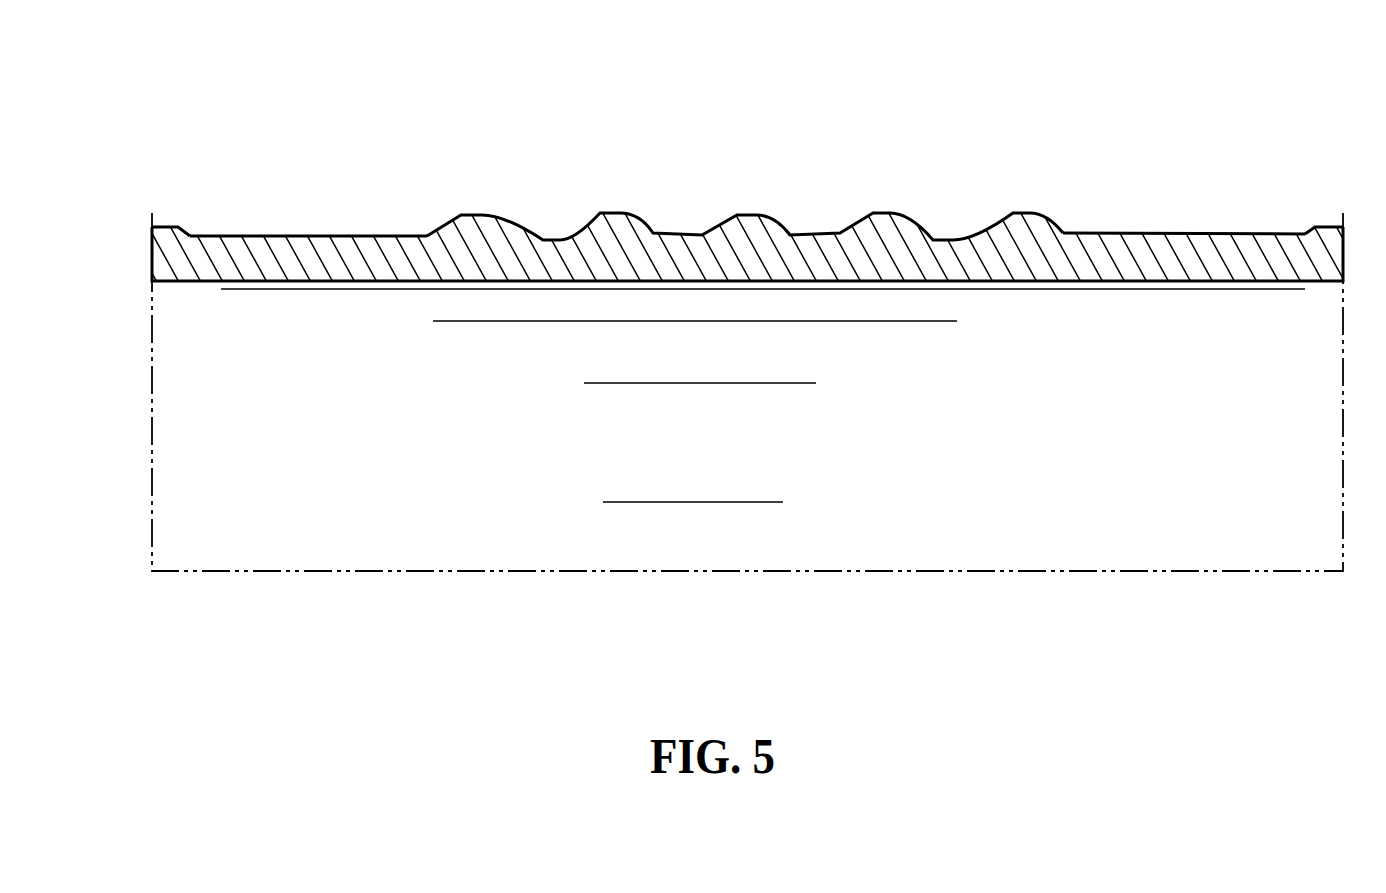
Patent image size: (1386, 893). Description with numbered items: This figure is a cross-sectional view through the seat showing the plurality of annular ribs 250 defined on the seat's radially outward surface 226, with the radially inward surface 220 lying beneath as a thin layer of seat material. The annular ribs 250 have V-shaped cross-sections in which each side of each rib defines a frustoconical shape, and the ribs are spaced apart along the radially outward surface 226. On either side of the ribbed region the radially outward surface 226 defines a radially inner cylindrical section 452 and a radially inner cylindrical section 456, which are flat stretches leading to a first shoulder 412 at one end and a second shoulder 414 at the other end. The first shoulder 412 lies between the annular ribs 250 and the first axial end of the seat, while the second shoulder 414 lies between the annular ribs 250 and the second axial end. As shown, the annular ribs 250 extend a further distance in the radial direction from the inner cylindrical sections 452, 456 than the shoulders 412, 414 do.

The radially inward surface 220 is at (1015, 282).
The radially outward surface 226 is at (1143, 233).
The annular ribs 250 is at (1062, 185).
The first shoulder 412 is at (183, 227).
The second shoulder 414 is at (1305, 232).
The radially inner cylindrical section 452 is at (307, 237).
The radially inner cylindrical section 456 is at (1218, 237).